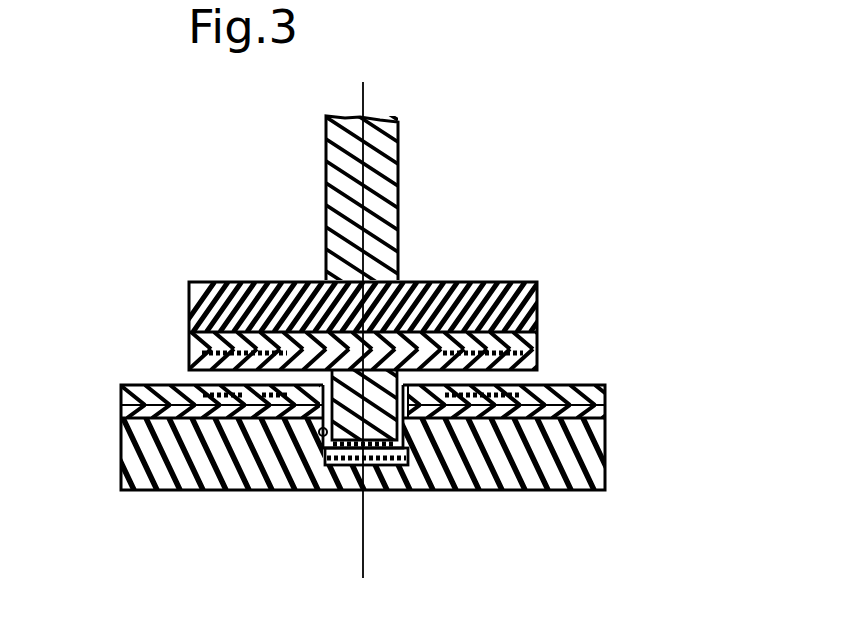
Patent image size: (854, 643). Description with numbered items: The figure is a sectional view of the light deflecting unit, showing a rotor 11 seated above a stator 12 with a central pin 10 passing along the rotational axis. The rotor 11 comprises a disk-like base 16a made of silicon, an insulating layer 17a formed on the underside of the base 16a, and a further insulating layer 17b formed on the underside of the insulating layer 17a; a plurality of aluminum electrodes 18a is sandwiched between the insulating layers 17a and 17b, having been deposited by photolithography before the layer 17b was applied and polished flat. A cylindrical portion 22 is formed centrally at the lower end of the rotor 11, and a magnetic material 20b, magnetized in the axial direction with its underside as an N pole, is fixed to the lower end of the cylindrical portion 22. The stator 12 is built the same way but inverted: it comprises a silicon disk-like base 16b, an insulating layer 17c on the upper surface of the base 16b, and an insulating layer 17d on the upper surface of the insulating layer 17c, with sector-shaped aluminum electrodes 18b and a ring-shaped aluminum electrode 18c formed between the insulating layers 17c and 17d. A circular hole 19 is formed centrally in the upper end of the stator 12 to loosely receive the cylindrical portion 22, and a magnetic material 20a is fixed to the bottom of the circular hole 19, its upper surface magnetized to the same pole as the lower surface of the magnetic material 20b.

The pin 10 is at (398, 160).
The rotor 11 is at (646, 310).
The stator 12 is at (647, 441).
The disk-like base 16a is at (537, 291).
The disk-like base 16b is at (118, 483).
The insulating layer 17a is at (537, 333).
The insulating layer 17b is at (537, 362).
The insulating layer 17c is at (122, 447).
The insulating layer 17d is at (121, 396).
The aluminum electrodes 18a is at (537, 353).
The aluminum electrodes 18b is at (200, 400).
The aluminum electrode 18c is at (262, 400).
The circular hole 19 is at (320, 437).
The magnetic material 20a is at (380, 465).
The magnetic material 20b is at (333, 448).
The cylindrical portion 22 is at (409, 466).